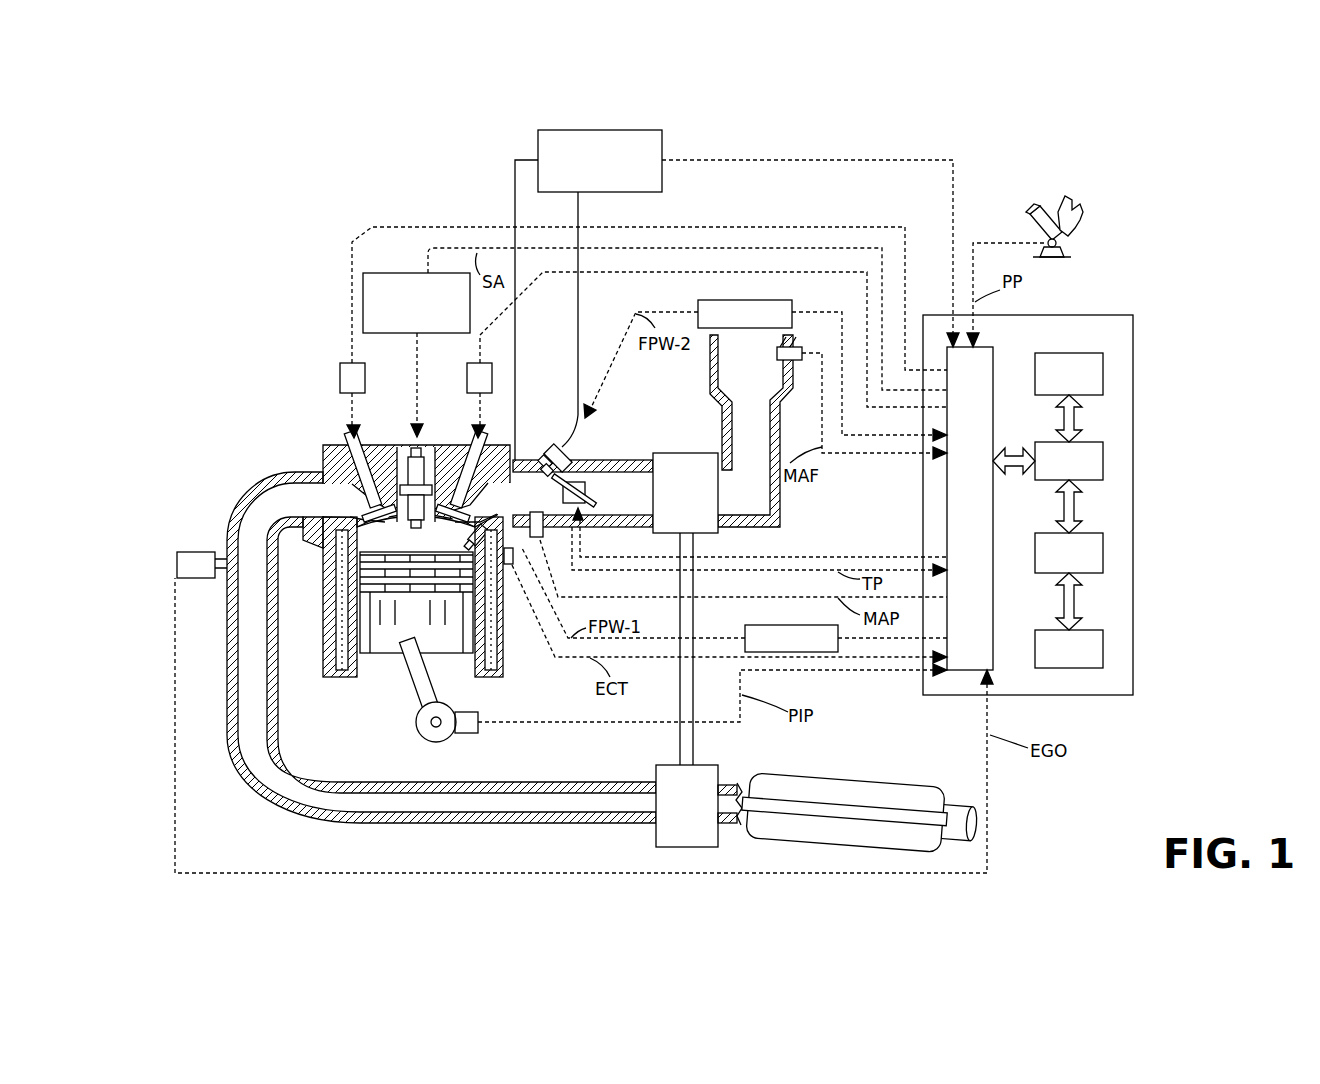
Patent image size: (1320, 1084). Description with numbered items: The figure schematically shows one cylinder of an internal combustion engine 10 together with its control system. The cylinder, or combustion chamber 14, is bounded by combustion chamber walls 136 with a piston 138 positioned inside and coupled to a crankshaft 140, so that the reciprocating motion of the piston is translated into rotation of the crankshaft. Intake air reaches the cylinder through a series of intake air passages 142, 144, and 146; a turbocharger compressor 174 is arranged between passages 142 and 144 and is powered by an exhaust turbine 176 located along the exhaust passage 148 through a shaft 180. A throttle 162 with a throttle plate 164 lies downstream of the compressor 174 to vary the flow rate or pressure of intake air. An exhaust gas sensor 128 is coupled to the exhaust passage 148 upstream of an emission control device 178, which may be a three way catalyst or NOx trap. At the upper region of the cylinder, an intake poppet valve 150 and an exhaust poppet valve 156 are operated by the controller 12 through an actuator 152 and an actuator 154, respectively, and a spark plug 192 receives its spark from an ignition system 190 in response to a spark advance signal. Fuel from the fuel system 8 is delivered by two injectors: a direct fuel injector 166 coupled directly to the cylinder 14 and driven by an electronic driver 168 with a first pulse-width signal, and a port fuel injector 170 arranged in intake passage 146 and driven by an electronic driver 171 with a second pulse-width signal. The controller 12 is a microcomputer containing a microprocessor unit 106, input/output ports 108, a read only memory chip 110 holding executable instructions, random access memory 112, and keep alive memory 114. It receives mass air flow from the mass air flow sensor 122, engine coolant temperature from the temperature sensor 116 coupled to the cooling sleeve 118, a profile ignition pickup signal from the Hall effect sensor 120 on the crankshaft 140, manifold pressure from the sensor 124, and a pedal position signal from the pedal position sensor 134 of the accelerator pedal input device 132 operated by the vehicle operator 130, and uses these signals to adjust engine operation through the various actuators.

The fuel system 8 is at (634, 131).
The internal combustion engine 10 is at (262, 403).
The controller 12 is at (1133, 315).
The cylinder 14 is at (415, 535).
The microprocessor unit 106 is at (1103, 455).
The input/output ports 108 is at (995, 354).
The read only memory chip 110 is at (1103, 372).
The random access memory 112 is at (1103, 548).
The keep alive memory 114 is at (1103, 643).
The temperature sensor 116 is at (517, 572).
The cooling sleeve 118 is at (506, 548).
The Hall effect sensor 120 is at (466, 735).
The mass air flow sensor 122 is at (790, 346).
The manifold pressure sensor 124 is at (545, 540).
The exhaust gas sensor 128 is at (177, 558).
The vehicle operator 130 is at (1075, 212).
The input device 132 is at (1030, 222).
The pedal position sensor 134 is at (1060, 243).
The combustion chamber walls 136 is at (363, 660).
The piston 138 is at (400, 627).
The crankshaft 140 is at (428, 740).
The intake air passage 142 is at (751, 431).
The intake air passage 144 is at (550, 493).
The intake air passage 146 is at (494, 476).
The exhaust passage 148 is at (441, 647).
The intake poppet valve 150 is at (414, 482).
The actuator 152 is at (467, 380).
The actuator 154 is at (340, 380).
The exhaust poppet valve 156 is at (372, 513).
The throttle 162 is at (573, 480).
The throttle plate 164 is at (543, 464).
The fuel injector 166 is at (483, 526).
The electronic driver 168 is at (748, 626).
The fuel injector 170 is at (557, 448).
The electronic driver 171 is at (700, 301).
The compressor 174 is at (670, 453).
The exhaust turbine 176 is at (656, 832).
The emission control device 178 is at (905, 783).
The shaft 180 is at (685, 730).
The ignition system 190 is at (375, 273).
The spark plug 192 is at (405, 452).